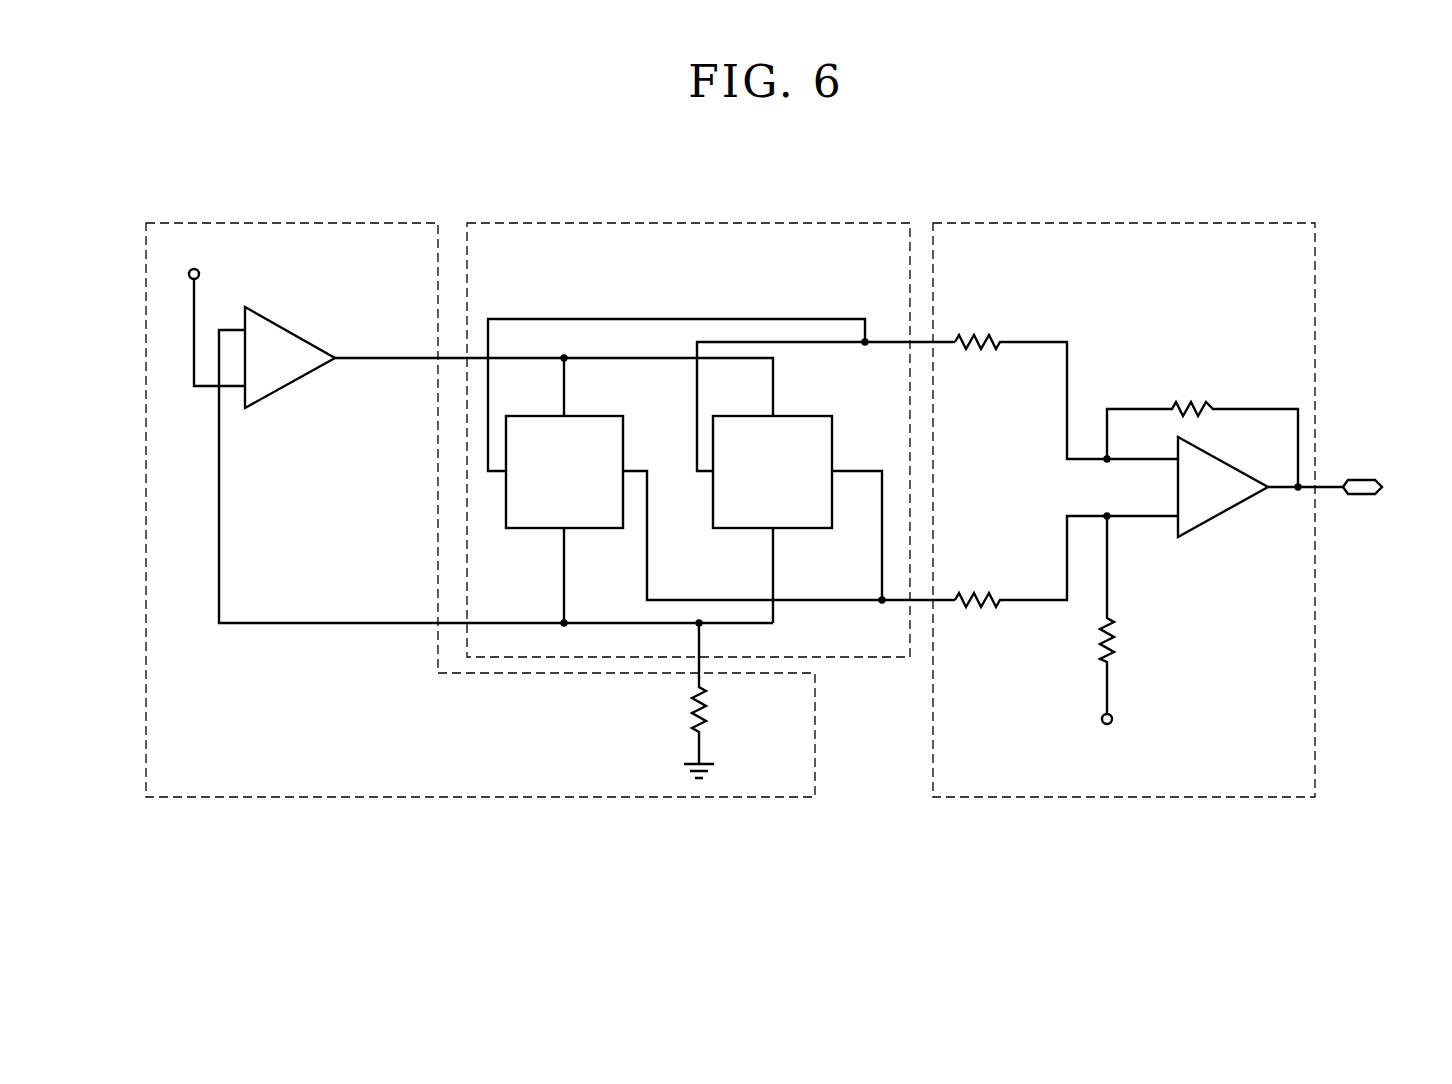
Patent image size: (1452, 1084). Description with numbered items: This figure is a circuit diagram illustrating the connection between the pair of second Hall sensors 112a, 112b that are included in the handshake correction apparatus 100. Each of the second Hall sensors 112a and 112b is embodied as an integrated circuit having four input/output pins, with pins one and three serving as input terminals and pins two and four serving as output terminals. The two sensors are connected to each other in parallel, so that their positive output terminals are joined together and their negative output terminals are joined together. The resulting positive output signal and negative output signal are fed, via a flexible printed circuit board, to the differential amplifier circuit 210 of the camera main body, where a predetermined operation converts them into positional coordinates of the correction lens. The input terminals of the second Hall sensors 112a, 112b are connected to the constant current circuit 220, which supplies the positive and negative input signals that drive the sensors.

The constant current circuit 220 is at (270, 222).
The handshake correction apparatus 100 is at (692, 222).
The second Hall sensor 112a is at (800, 413).
The second Hall sensor 112b is at (598, 413).
The differential amplifier circuit 210 is at (1108, 222).